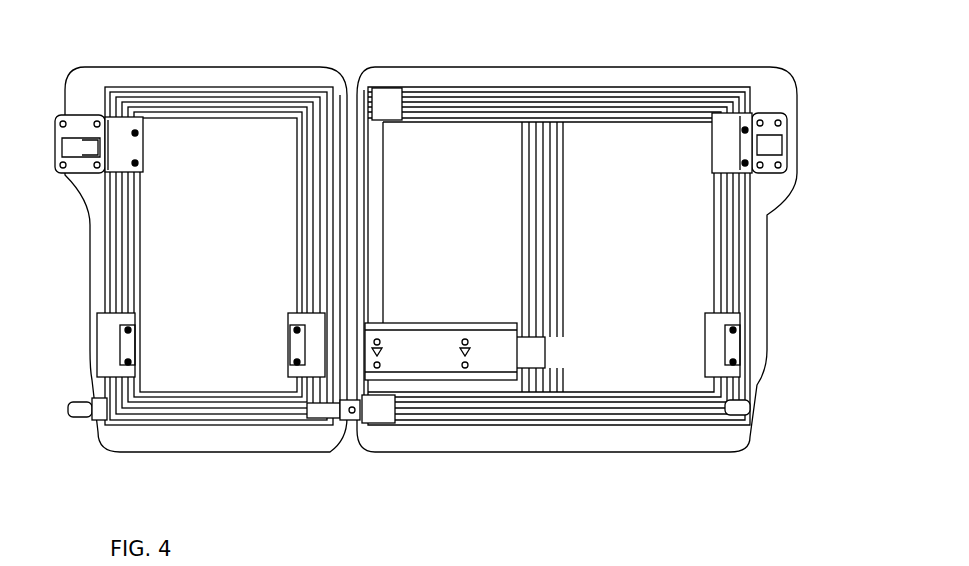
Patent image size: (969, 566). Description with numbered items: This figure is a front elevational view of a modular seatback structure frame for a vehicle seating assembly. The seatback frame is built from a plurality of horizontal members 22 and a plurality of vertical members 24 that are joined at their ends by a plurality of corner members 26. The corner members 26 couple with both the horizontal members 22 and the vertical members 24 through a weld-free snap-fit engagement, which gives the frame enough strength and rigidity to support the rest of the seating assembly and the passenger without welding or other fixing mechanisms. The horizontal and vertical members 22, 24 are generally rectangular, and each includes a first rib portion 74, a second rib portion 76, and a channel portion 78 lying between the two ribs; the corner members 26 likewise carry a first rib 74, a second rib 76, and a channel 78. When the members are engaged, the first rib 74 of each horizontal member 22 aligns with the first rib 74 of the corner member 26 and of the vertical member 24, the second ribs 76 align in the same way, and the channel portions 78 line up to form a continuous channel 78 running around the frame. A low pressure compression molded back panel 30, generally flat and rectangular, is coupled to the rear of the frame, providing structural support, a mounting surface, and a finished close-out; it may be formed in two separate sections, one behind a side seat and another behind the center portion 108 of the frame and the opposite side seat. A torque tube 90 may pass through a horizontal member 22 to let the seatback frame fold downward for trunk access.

The horizontal member 22 is at (267, 95).
The vertical member 24 is at (110, 245).
The corner member 26 is at (106, 88).
The low pressure compression molded back panel 30 is at (562, 73).
The first rib portion 74 is at (172, 97).
The second rib portion 76 is at (176, 122).
The channel portion 78 is at (205, 103).
The torque tube 90 is at (70, 406).
The center portion 108 is at (477, 158).